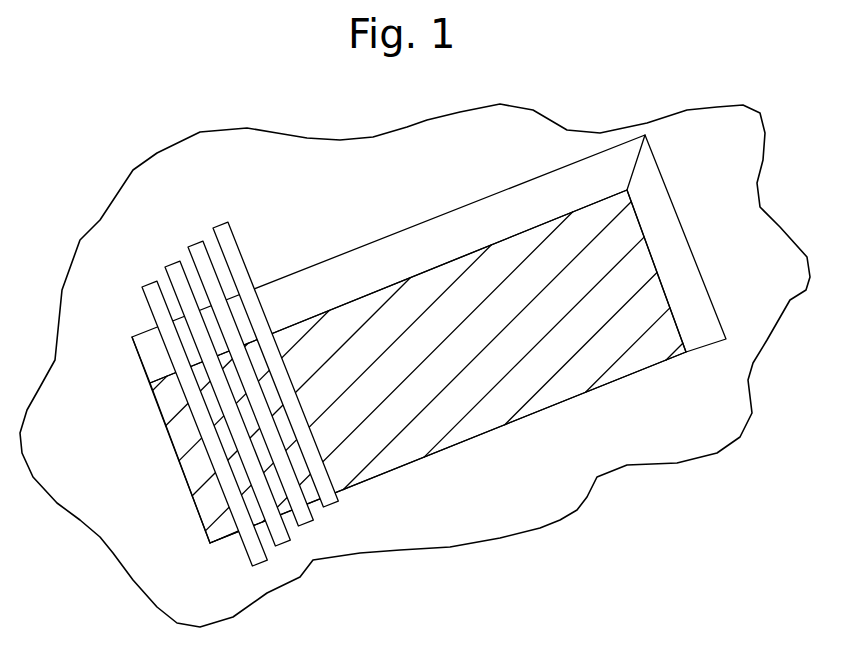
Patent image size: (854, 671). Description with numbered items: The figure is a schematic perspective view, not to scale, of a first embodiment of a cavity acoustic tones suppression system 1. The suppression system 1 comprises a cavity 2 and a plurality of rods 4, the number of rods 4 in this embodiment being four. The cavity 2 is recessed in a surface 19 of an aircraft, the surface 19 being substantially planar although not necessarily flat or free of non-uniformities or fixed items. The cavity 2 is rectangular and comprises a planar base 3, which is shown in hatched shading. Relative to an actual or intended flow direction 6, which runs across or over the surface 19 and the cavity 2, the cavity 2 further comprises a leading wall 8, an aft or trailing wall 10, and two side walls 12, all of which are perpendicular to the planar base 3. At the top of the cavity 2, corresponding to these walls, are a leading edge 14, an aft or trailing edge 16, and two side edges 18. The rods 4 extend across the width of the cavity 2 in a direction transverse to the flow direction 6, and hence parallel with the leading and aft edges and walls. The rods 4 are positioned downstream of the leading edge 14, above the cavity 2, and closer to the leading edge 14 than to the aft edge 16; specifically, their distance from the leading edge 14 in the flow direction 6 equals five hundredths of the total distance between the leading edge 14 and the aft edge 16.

The cavity acoustic tones suppression system 1 is at (750, 88).
The cavity 2 is at (620, 327).
The planar base 3 is at (373, 442).
The rods 4 is at (143, 290).
The flow direction 6 is at (133, 458).
The leading wall 8 is at (210, 505).
The aft wall 10 is at (675, 266).
The side walls 12 is at (430, 238).
The leading edge 14 is at (212, 530).
The aft edge 16 is at (669, 191).
The side edges 18 is at (365, 244).
The surface 19 is at (277, 150).